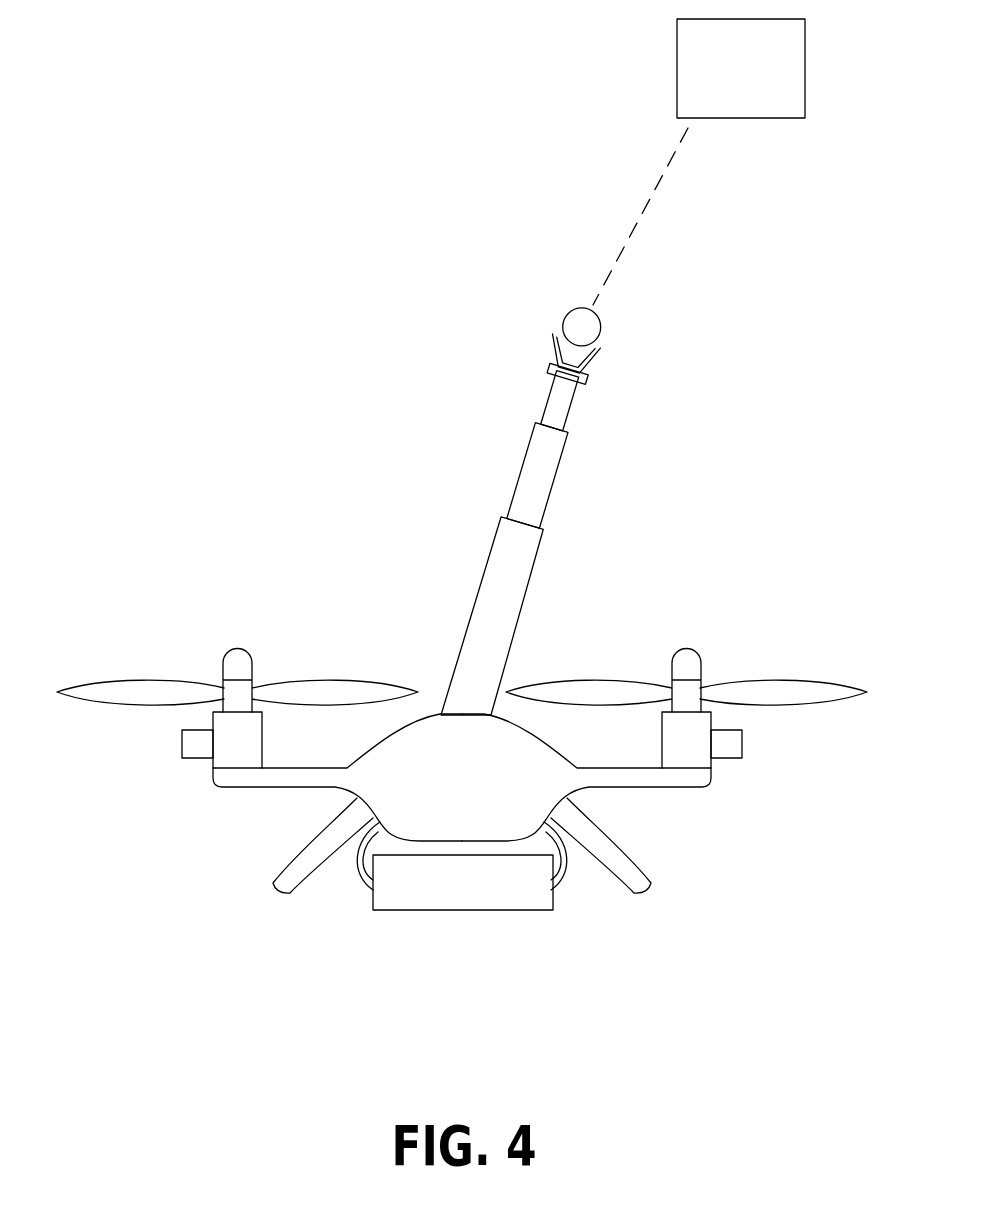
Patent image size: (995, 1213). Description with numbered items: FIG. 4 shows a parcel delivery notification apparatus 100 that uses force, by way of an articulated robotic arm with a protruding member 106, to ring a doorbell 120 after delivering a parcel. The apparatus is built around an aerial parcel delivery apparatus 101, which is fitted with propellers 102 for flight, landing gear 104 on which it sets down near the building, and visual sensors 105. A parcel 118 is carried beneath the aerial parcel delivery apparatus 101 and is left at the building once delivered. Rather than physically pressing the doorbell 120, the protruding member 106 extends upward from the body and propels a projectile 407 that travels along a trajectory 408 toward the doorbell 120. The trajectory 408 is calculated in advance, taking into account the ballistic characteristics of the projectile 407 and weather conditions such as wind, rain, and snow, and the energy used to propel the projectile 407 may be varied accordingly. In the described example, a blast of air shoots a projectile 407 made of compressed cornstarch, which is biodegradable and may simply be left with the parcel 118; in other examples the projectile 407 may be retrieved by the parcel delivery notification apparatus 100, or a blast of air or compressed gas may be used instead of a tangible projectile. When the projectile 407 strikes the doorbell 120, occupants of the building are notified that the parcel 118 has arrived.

The parcel delivery notification apparatus 100 is at (180, 442).
The aerial parcel delivery apparatus 101 is at (486, 796).
The propellers 102 is at (203, 613).
The landing gear 104 is at (310, 912).
The visual sensors 105 is at (182, 741).
The protruding member 106 is at (492, 551).
The parcel 118 is at (488, 898).
The doorbell 120 is at (714, 91).
The projectile 407 is at (565, 307).
The trajectory 408 is at (625, 248).